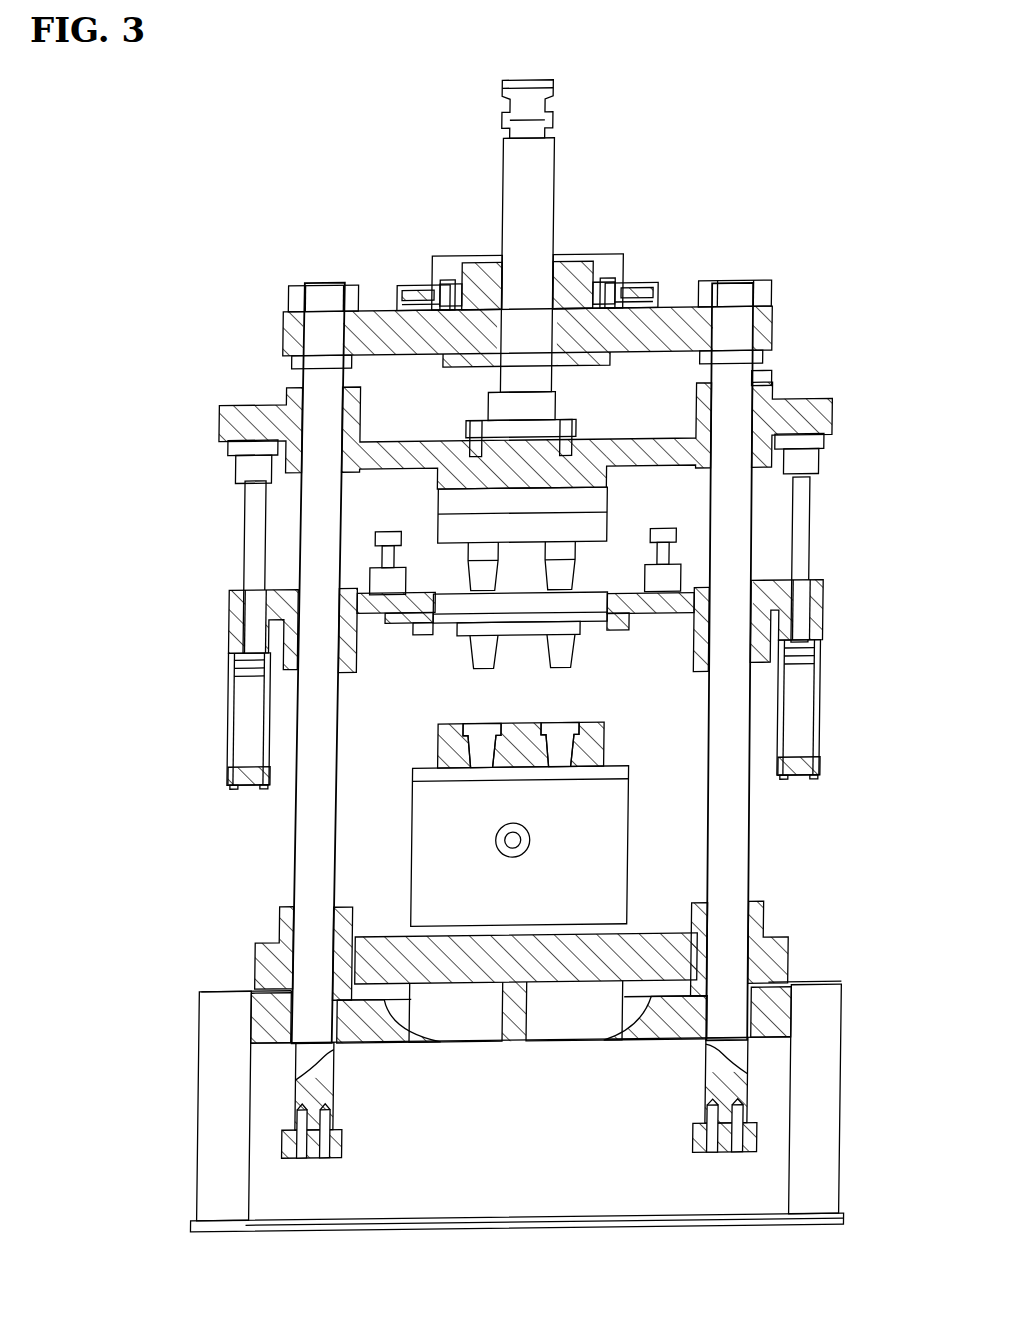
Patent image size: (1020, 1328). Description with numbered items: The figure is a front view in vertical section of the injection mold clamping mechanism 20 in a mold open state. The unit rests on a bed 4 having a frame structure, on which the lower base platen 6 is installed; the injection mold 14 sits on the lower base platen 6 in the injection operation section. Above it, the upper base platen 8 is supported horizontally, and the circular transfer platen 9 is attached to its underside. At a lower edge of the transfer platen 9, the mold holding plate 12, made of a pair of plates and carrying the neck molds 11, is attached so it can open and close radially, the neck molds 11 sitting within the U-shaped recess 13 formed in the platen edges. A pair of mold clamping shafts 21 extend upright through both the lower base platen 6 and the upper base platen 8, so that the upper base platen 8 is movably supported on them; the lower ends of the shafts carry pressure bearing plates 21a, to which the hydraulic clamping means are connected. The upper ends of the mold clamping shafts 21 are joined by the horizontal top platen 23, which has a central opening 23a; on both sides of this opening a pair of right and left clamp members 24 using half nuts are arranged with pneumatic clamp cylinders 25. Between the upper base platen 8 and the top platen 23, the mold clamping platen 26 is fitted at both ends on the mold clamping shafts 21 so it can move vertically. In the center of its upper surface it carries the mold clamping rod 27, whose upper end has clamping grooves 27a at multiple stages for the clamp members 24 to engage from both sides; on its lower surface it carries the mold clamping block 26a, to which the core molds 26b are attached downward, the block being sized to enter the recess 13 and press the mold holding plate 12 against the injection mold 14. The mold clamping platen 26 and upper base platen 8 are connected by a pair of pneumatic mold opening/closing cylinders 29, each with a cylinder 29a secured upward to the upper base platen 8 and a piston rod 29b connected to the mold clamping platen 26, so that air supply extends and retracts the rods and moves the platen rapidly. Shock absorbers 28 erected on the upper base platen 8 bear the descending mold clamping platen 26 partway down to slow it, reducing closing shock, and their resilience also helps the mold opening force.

The bed 4 is at (197, 1006).
The lower base platen 6 is at (598, 953).
The upper base platen 8 is at (675, 613).
The transfer platen 9 is at (397, 630).
The neck molds 11 is at (577, 642).
The mold holding plate 12 is at (453, 638).
The U-shaped recess 13 is at (460, 592).
The injection mold 14 is at (588, 742).
The vertical type mold clamping mechanism 20 is at (788, 378).
The mold clamping shafts 21 is at (312, 846).
The pressure bearing plates 21a is at (342, 1148).
The top platen 23 is at (365, 336).
The central opening 23a is at (512, 379).
The clamp members 24 is at (473, 254).
The pneumatic clamp cylinders 25 is at (412, 285).
The mold clamping platen 26 is at (633, 442).
The mold clamping block 26a is at (590, 503).
The core molds 26b is at (563, 570).
The mold clamping rod 27 is at (532, 190).
The clamping grooves 27a is at (552, 129).
The shock absorbers 28 is at (384, 575).
The mold opening/closing cylinders 29 is at (222, 690).
The cylinder 29a is at (230, 743).
The piston rod 29b is at (252, 521).